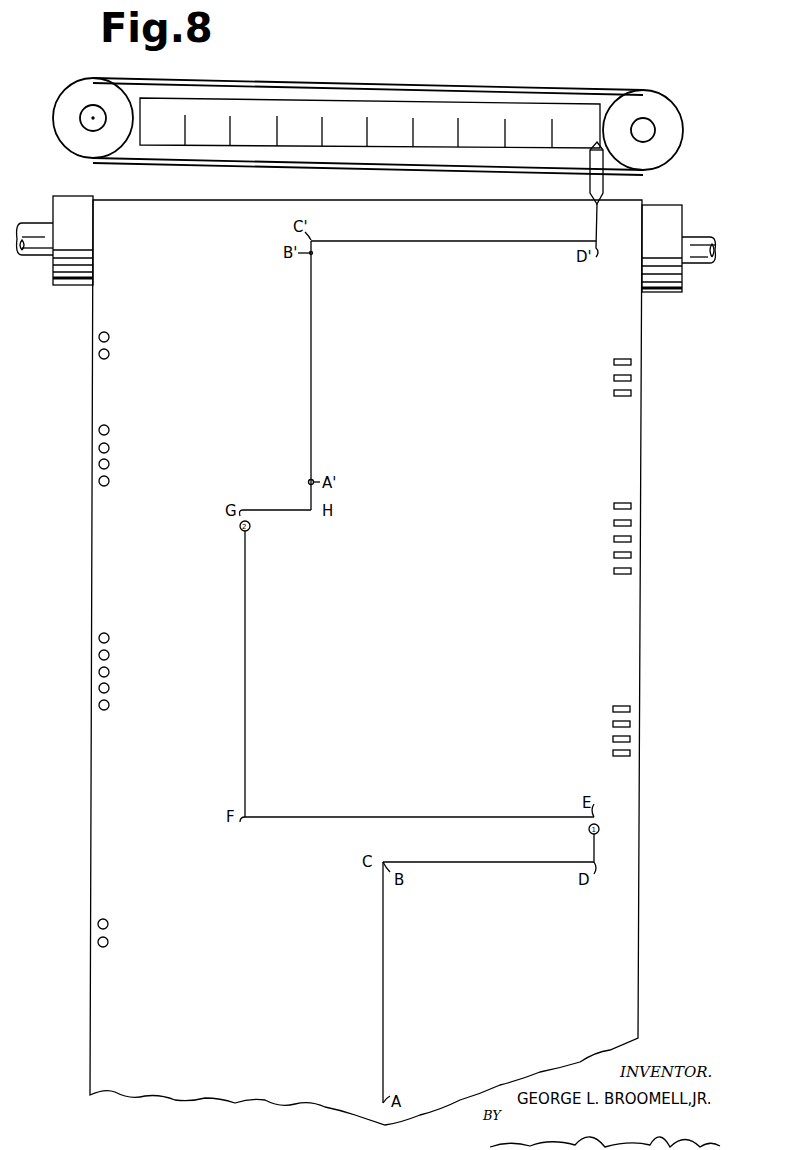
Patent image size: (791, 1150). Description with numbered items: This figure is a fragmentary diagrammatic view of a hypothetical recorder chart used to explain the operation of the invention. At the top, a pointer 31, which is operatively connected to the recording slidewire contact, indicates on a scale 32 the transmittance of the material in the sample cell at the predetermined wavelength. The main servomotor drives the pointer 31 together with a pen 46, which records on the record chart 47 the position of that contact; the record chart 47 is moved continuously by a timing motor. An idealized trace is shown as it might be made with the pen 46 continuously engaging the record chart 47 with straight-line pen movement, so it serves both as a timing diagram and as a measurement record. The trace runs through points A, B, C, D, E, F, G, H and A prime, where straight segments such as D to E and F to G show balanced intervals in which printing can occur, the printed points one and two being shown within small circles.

The scale 32 is at (200, 136).
The pointer 31 is at (596, 152).
The pen 46 is at (600, 187).
The record chart 47 is at (97, 451).